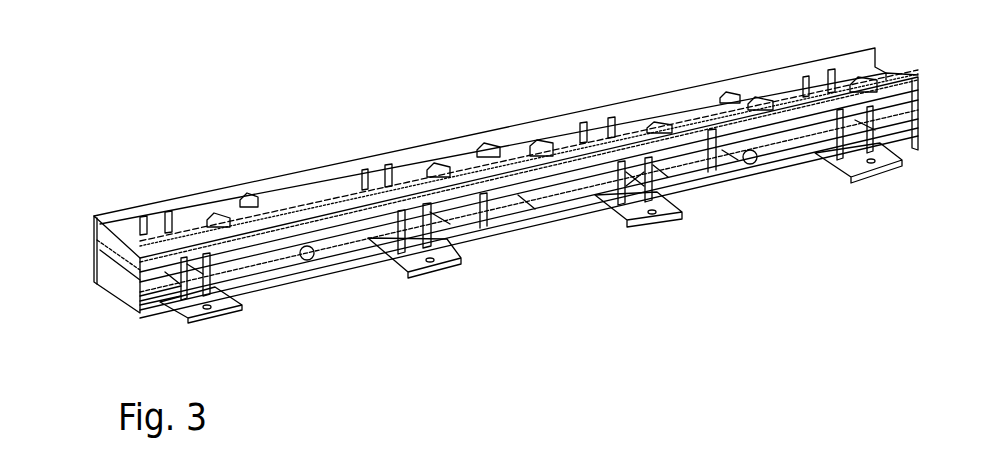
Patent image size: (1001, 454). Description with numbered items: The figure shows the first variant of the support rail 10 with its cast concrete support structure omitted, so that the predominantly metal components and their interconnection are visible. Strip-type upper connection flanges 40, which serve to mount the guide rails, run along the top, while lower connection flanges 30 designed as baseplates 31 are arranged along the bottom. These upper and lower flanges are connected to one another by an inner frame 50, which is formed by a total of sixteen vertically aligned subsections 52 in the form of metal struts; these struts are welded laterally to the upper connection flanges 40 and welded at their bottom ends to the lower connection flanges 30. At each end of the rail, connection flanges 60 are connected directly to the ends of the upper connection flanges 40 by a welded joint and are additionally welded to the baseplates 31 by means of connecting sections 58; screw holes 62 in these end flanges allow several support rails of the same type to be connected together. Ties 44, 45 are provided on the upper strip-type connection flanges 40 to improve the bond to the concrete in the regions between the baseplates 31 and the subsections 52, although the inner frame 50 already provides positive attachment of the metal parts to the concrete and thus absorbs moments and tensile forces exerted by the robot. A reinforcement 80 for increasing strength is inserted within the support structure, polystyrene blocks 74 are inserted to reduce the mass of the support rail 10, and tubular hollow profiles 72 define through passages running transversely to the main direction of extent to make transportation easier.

The support rail 10 is at (485, 177).
The lower connection flanges 30 is at (550, 246).
The baseplates 31 is at (227, 308).
The upper connection flanges 40 is at (157, 212).
The tie 44 is at (213, 215).
The tie 45 is at (247, 200).
The inner frame 50 is at (383, 233).
The subsections 52 is at (423, 213).
The connecting sections 58 is at (162, 293).
The connection flanges 60 is at (118, 277).
The screw holes 62 is at (95, 263).
The tubular hollow profiles 72 is at (310, 258).
The polystyrene blocks 74 is at (348, 238).
The reinforcement 80 is at (530, 210).